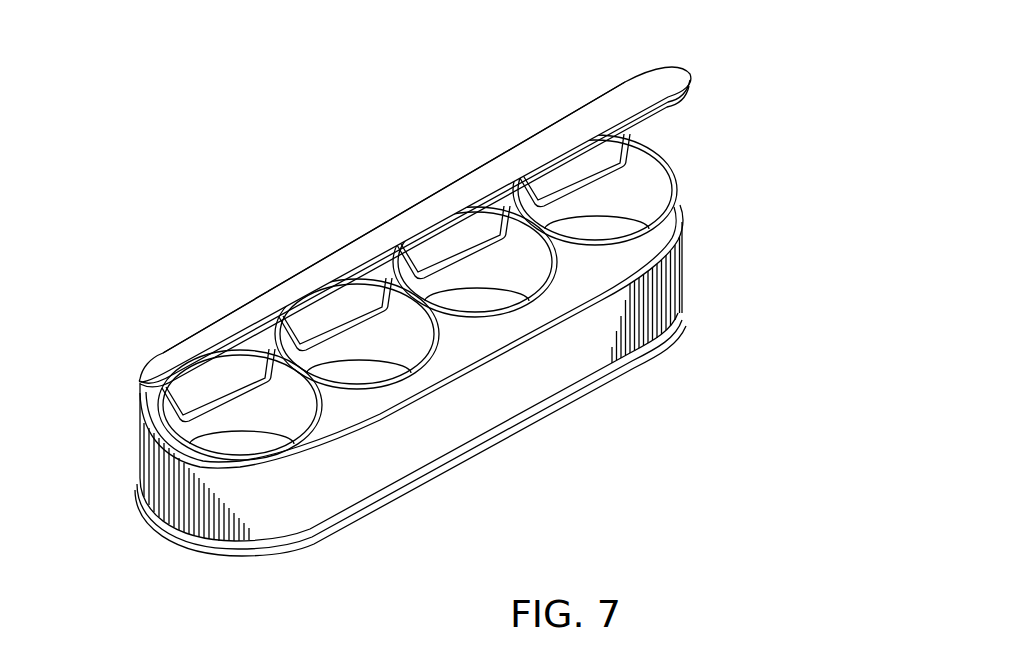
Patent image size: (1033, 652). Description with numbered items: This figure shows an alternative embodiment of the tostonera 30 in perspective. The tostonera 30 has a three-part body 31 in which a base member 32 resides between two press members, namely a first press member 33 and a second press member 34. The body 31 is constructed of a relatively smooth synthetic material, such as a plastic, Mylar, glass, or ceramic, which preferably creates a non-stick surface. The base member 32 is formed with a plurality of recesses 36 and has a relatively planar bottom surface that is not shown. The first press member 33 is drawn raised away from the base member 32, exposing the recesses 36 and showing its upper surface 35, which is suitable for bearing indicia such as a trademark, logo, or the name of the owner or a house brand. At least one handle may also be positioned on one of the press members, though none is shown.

The tostonera 30 is at (500, 78).
The three-part body 31 is at (160, 480).
The base member 32 is at (668, 283).
The first press member 33 is at (645, 88).
The second press member 34 is at (650, 345).
The upper surface 35 is at (337, 262).
The recesses 36 is at (625, 196).